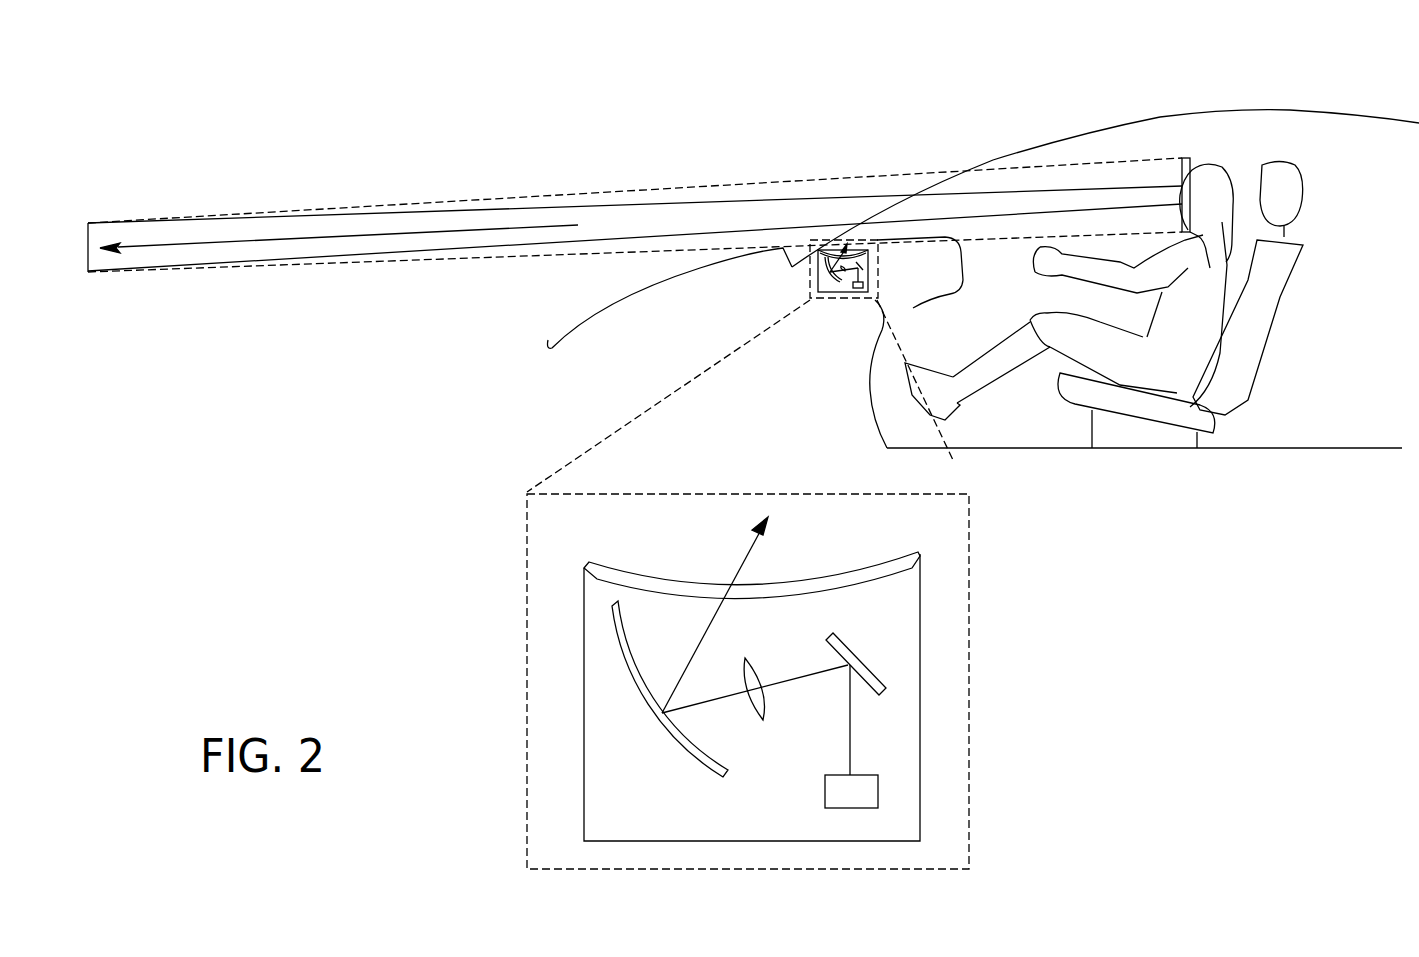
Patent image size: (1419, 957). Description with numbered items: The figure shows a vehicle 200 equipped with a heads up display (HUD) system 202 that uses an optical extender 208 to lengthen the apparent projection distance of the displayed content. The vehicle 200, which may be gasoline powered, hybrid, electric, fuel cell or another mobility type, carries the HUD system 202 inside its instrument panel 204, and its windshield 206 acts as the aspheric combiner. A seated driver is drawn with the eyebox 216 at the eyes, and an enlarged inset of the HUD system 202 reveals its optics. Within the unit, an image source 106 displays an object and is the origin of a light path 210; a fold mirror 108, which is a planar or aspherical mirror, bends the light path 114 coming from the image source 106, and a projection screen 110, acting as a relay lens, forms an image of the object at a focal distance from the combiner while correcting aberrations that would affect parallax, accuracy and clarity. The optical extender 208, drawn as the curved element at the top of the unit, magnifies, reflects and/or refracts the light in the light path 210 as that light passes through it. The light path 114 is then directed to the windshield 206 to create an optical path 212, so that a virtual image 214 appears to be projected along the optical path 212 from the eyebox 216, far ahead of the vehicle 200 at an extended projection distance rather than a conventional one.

The vehicle 200 is at (1280, 113).
The heads up display (HUD) system 202 is at (840, 300).
The instrument panel 204 is at (812, 282).
The windshield 206 is at (928, 186).
The optical extender 208 is at (838, 579).
The light path 210 is at (852, 730).
The optical path 212 is at (381, 240).
The virtual image 214 is at (88, 241).
The eyebox 216 is at (1201, 172).
The image source 106 is at (825, 792).
The fold mirror 108 is at (850, 645).
The projection screen 110 is at (757, 675).
The light path 114 is at (680, 752).